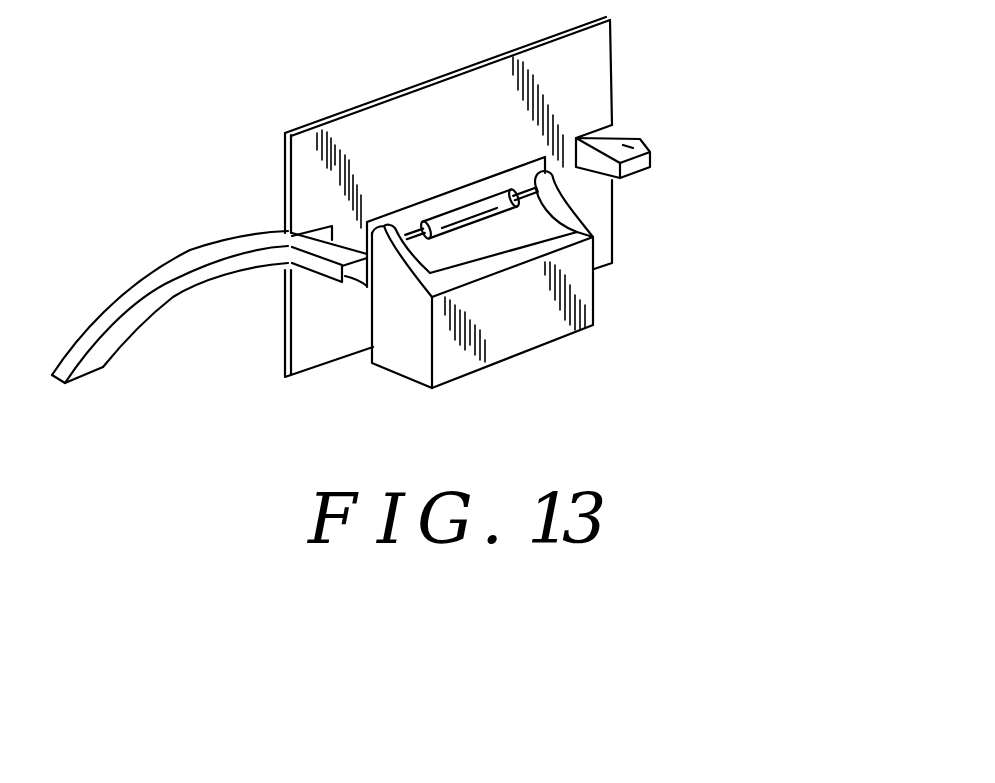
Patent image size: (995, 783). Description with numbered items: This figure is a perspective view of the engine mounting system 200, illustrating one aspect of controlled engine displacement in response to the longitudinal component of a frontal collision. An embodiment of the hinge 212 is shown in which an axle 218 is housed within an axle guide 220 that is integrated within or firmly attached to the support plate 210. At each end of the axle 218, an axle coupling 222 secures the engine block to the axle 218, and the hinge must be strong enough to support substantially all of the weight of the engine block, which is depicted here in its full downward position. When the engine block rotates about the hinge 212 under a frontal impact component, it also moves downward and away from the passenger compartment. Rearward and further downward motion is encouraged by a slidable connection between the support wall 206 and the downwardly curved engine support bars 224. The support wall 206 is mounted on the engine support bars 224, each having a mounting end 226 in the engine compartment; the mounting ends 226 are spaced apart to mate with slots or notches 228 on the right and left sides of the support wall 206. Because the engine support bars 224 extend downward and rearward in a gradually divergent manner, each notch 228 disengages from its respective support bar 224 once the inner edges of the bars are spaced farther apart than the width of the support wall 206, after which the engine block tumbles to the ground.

The strap retaining assembly 200 is at (745, 112).
The support wall 206 is at (313, 157).
The support plate 210 is at (400, 215).
The hinge 212 is at (488, 212).
The axle 218 is at (556, 207).
The axle guide 220 is at (442, 213).
The axle coupling 222 is at (597, 288).
The engine support bar 224 is at (640, 142).
The mounting end 226 is at (642, 162).
The slot or notch 228 is at (590, 128).